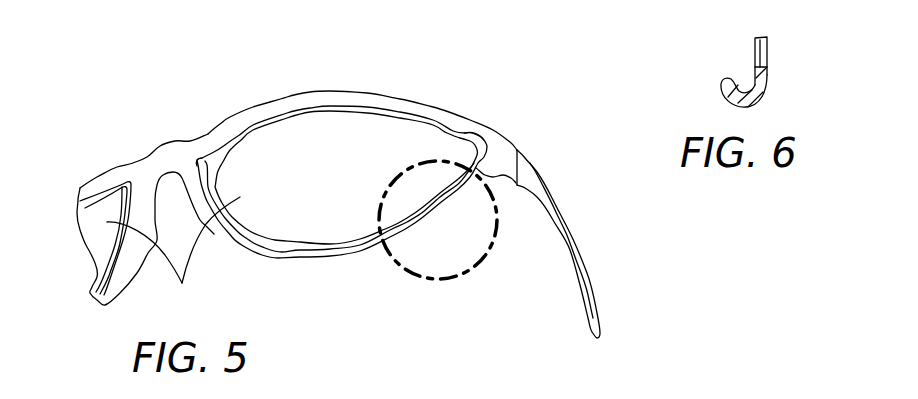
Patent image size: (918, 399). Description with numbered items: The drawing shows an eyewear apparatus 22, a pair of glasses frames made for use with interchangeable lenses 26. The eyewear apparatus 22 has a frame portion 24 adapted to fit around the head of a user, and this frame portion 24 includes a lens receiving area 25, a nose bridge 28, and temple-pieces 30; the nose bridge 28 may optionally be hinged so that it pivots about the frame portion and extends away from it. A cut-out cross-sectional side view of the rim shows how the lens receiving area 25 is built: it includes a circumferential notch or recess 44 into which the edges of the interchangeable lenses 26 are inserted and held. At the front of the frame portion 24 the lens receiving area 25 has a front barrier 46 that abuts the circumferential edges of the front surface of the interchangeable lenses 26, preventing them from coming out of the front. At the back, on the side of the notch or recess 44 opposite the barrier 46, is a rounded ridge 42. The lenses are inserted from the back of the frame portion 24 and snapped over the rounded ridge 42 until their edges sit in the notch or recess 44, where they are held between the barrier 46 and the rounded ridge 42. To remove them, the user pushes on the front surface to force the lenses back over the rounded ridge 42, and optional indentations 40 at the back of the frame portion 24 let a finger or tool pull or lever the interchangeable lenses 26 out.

In FIG. 5, the eyewear apparatus 22 is at (150, 46).
In FIG. 5, the frame portion 24 is at (118, 168).
In FIG. 5, the lens receiving area 25 is at (92, 184).
In FIG. 5, the interchangeable lenses 26 is at (173, 258).
In FIG. 5, the nose bridge 28 is at (167, 150).
In FIG. 5, the temple-pieces 30 is at (553, 200).
In FIG. 5, the indentations 40 is at (202, 159).
In FIG. 5, the rounded ridge 42 is at (310, 252).
In FIG. 6, the rounded ridge 42 is at (724, 81).
In FIG. 6, the circumferential notch or recess 44 is at (738, 88).
In FIG. 5, the front barrier 46 is at (263, 238).
In FIG. 6, the front barrier 46 is at (768, 76).